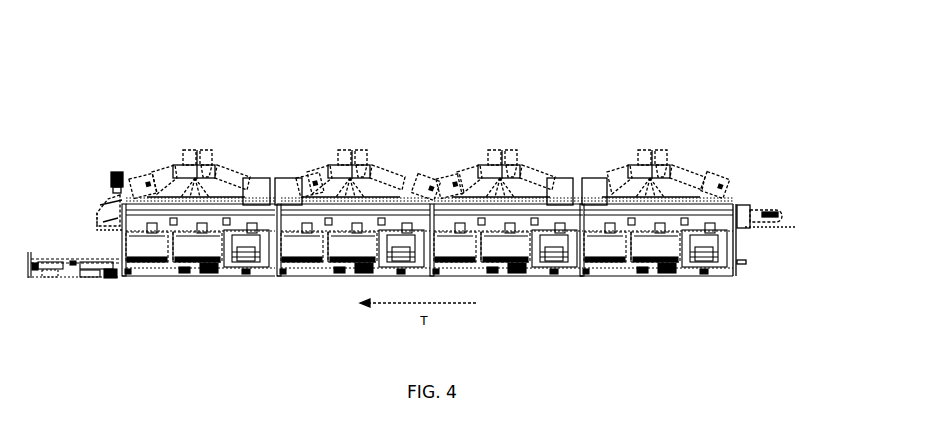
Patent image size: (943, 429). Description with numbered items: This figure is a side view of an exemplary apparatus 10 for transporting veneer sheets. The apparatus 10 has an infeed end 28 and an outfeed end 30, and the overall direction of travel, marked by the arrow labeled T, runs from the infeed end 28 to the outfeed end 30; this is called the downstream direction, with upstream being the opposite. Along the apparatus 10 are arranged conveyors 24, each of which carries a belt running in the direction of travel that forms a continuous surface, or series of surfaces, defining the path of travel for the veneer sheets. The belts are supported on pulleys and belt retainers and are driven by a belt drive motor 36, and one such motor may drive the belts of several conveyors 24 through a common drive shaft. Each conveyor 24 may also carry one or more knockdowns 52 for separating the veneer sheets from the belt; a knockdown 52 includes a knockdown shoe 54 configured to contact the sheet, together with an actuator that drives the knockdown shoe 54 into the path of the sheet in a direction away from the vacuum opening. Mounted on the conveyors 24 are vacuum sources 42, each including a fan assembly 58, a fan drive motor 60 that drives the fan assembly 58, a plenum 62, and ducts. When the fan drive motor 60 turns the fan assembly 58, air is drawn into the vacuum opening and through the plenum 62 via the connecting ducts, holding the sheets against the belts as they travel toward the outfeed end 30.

The apparatus 10 is at (456, 210).
The conveyor 24 is at (741, 166).
The infeed end 28 is at (783, 263).
The outfeed end 30 is at (77, 210).
The belt drive motor 36 is at (118, 175).
The vacuum source 42 is at (358, 147).
The knockdown 52 is at (636, 246).
The knockdown shoe 54 is at (648, 236).
The fan assembly 58 is at (338, 168).
The fan drive motor 60 is at (342, 158).
The plenum 62 is at (325, 190).